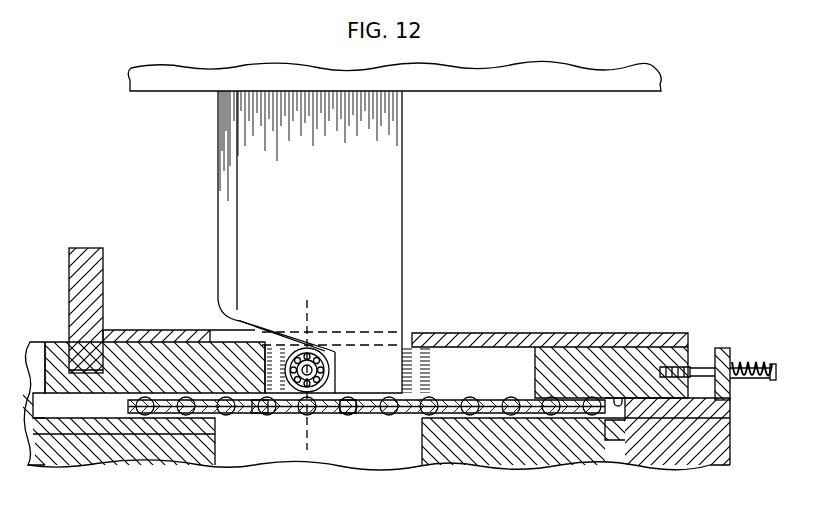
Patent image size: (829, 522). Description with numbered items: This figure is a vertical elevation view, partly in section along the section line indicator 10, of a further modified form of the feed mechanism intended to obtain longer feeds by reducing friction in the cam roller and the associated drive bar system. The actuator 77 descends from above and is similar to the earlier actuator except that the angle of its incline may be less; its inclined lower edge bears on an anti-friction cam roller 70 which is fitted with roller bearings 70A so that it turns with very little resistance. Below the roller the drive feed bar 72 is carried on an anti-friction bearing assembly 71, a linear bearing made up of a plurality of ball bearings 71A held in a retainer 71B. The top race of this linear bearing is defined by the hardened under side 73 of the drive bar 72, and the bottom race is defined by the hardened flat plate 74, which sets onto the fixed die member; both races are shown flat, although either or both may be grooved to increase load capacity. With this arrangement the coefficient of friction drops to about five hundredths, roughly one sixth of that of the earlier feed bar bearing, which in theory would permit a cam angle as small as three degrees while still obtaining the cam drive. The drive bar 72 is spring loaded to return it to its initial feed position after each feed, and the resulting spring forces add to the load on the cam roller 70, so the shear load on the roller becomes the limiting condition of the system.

The section line indicator 10 is at (307, 282).
The anti-friction cam roller 70 is at (330, 368).
The roller bearings 70A is at (312, 352).
The anti-friction bearing assembly 71 is at (127, 404).
The ball bearings 71A is at (347, 418).
The retainer 71B is at (262, 408).
The drive feed bar 72 is at (586, 362).
The hardened under side of the drive bar 73 is at (618, 398).
The hardened flat plate 74 is at (80, 418).
The actuator 77 is at (403, 203).